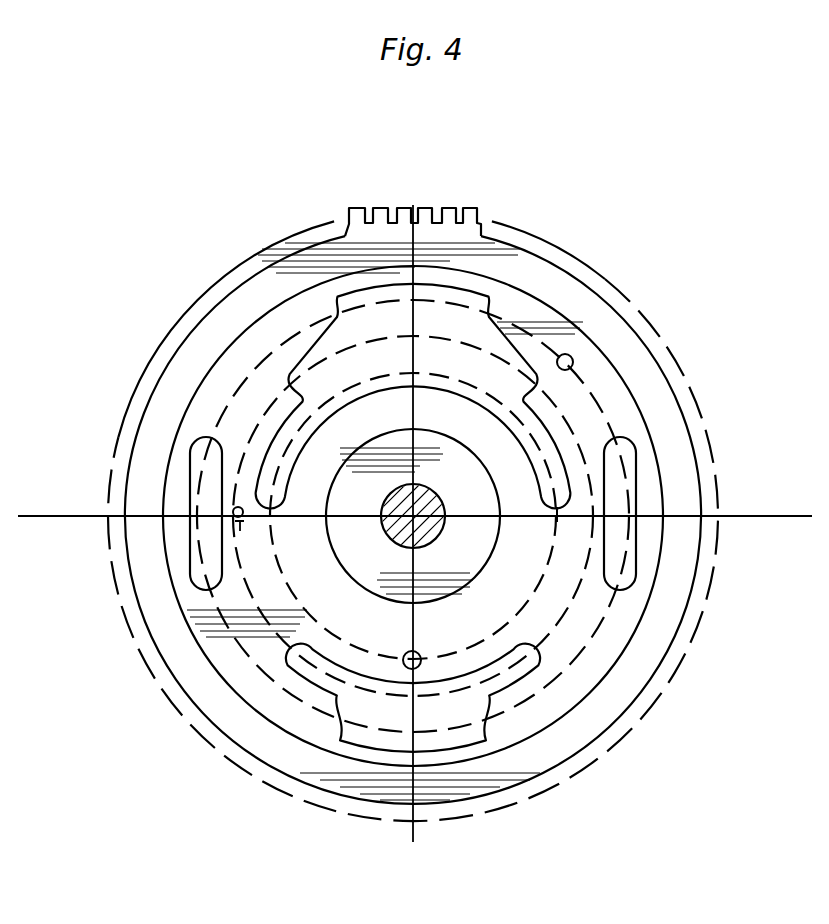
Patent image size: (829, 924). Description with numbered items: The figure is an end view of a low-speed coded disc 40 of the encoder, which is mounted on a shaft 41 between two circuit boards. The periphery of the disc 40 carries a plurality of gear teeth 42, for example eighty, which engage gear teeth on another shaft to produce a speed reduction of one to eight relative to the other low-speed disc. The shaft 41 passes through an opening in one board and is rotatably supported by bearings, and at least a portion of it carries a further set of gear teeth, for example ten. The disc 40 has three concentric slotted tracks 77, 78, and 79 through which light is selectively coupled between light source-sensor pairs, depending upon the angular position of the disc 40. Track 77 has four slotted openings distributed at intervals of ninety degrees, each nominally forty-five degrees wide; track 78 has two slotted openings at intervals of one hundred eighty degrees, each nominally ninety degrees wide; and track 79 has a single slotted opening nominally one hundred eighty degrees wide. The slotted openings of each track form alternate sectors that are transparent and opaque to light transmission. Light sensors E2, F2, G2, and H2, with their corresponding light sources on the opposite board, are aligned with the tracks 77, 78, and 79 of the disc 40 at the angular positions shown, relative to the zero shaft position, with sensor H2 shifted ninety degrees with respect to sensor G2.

The low-speed coded disc 40 is at (628, 695).
The shaft 41 is at (432, 502).
The gear teeth 42 is at (458, 207).
The track 77 is at (299, 330).
The track 78 is at (247, 446).
The track 79 is at (303, 601).
The light sensor E2 is at (575, 362).
The light sensor F2 is at (242, 530).
The light sensor G2 is at (421, 653).
The light sensor H2 is at (555, 519).